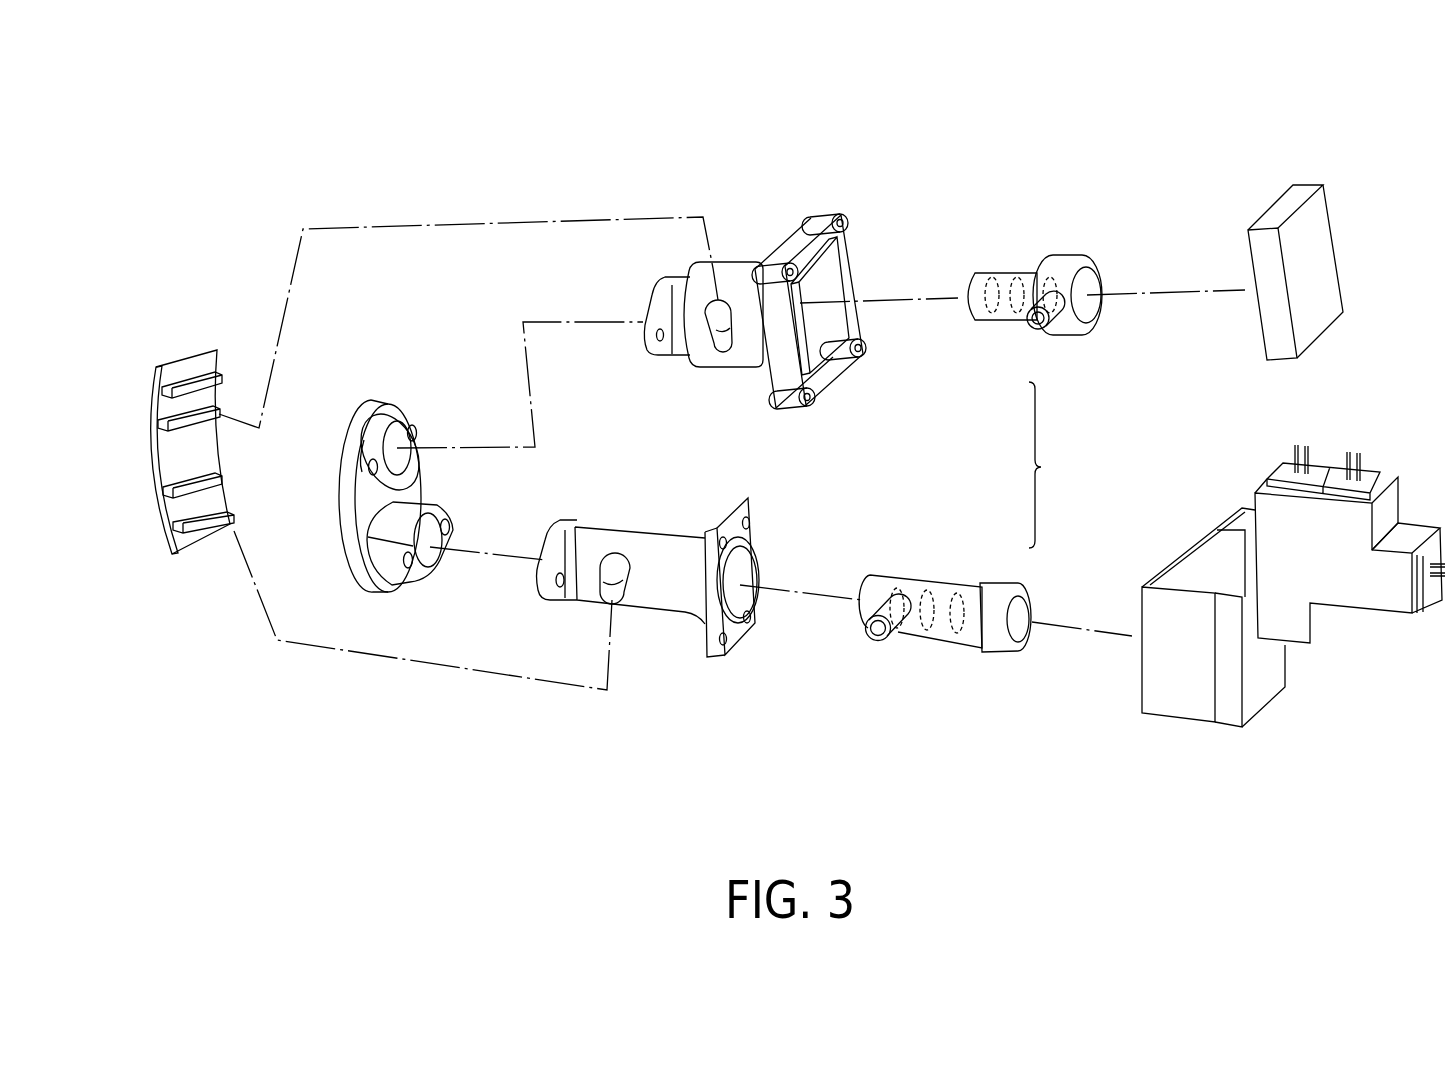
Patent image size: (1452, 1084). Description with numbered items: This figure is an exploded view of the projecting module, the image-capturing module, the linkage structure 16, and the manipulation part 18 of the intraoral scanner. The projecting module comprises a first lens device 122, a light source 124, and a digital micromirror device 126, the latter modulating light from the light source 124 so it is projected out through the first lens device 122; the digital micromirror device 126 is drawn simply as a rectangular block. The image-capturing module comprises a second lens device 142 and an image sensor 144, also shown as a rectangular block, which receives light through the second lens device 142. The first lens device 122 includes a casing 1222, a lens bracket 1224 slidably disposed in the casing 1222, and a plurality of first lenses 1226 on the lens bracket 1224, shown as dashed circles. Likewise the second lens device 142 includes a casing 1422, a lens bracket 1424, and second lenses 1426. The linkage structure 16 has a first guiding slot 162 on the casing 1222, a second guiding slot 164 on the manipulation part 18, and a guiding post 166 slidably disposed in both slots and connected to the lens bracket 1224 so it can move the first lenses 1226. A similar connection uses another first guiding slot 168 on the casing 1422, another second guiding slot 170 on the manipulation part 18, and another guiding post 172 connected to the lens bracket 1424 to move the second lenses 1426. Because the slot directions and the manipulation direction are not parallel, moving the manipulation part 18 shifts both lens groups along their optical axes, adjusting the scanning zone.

The linkage structure 16 is at (1052, 465).
The manipulation part 18 is at (162, 458).
The first lens device 122 is at (785, 649).
The light source 124 is at (1357, 592).
The digital micromirror device 126 is at (1258, 678).
The second lens device 142 is at (873, 270).
The image sensor 144 is at (1325, 248).
The first guiding slot 162 is at (617, 562).
The second guiding slot 164 is at (195, 505).
The guiding post 166 is at (880, 605).
The first guiding slot 168 is at (722, 350).
The second guiding slot 170 is at (197, 393).
The guiding post 172 is at (1030, 324).
The casing 1222 is at (663, 598).
The lens bracket 1224 is at (935, 633).
The first lenses 1226 is at (998, 676).
The casing 1422 is at (740, 266).
The lens bracket 1424 is at (1062, 266).
The second lenses 1426 is at (988, 292).